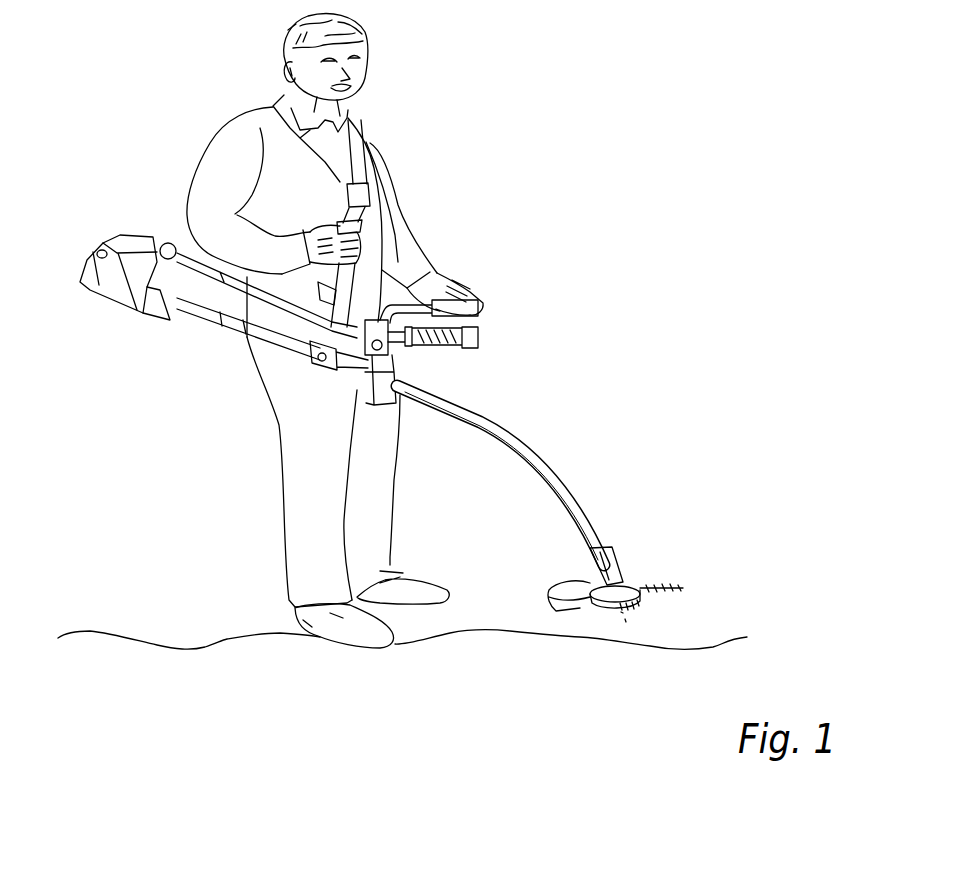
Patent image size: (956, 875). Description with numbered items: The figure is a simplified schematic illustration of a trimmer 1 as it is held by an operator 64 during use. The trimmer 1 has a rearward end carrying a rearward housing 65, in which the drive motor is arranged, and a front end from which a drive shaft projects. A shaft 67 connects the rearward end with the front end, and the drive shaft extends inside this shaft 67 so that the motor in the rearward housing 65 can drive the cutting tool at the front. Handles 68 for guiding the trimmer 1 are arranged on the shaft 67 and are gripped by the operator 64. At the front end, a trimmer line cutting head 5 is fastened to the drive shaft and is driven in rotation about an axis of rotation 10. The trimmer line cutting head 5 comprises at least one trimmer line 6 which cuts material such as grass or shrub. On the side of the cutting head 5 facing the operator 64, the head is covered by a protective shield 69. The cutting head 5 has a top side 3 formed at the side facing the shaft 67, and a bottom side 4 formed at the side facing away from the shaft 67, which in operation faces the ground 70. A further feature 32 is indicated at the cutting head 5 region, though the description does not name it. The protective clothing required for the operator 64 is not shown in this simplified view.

The trimmer 1 is at (578, 410).
The top side 3 is at (631, 554).
The bottom side 4 is at (582, 630).
The trimmer line cutting head 5 is at (640, 590).
The trimmer line 6 is at (660, 587).
The axis of rotation 10 is at (618, 630).
The blade holder 32 is at (646, 622).
The operator 64 is at (376, 164).
The rearward housing 65 is at (115, 285).
The shaft 67 is at (580, 503).
The handles 68 is at (483, 335).
The protective shield 69 is at (553, 590).
The ground 70 is at (727, 637).